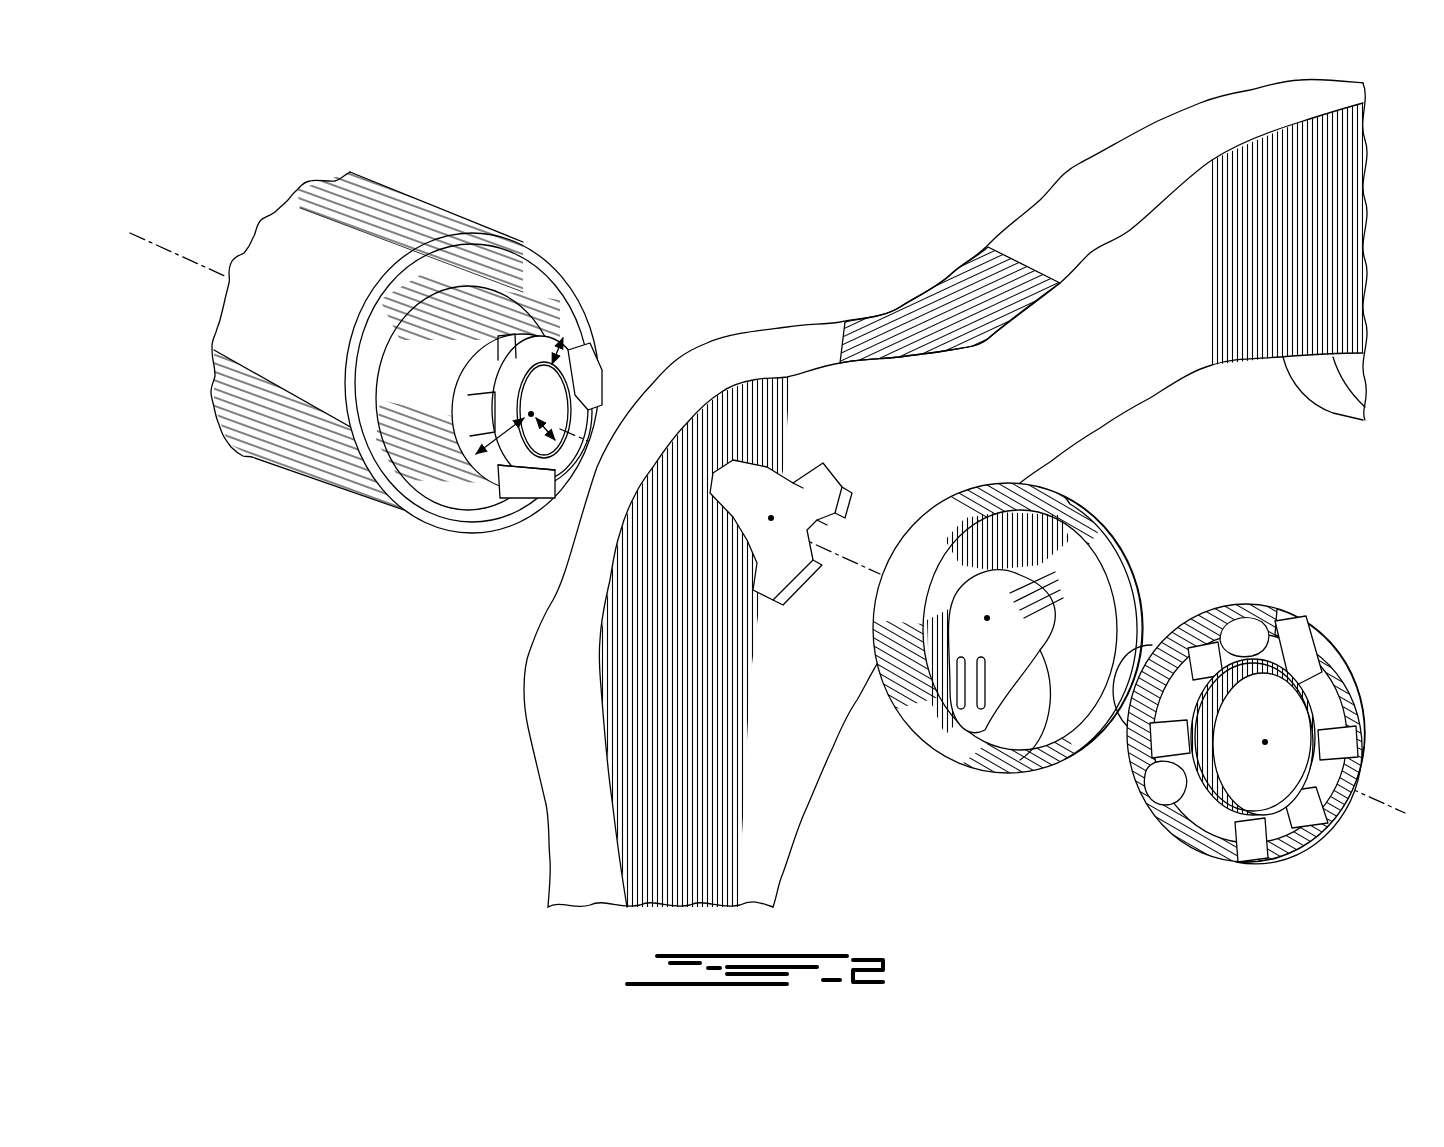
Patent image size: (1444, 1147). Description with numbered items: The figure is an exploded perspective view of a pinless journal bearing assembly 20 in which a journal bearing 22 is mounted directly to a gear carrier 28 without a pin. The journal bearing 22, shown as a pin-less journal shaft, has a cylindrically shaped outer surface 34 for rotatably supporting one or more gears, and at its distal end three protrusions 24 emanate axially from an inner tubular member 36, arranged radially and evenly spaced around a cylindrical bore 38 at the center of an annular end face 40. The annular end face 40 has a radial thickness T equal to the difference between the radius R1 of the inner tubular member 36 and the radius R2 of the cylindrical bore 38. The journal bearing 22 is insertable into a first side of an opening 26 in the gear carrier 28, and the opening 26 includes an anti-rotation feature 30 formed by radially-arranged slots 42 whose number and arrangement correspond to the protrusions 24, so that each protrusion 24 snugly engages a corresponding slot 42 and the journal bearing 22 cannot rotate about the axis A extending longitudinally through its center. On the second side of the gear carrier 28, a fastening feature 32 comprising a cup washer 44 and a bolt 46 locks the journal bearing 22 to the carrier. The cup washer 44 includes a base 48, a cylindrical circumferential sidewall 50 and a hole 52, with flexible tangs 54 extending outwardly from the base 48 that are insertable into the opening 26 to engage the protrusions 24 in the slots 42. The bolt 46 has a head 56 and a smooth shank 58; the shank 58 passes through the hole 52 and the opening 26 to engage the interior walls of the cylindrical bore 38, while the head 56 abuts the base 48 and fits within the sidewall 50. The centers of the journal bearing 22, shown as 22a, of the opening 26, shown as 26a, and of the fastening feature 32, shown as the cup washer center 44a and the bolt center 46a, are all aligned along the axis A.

The journal bearing assembly 20 is at (678, 185).
The journal bearing 22 is at (266, 198).
The center of the journal bearing 22a is at (477, 413).
The protrusion 24 is at (600, 380).
The opening 26 is at (790, 470).
The center of the carrier opening 26a is at (745, 575).
The gear carrier 28 is at (955, 320).
The anti-rotation feature 30 is at (753, 623).
The fastening feature 32 is at (1083, 785).
The outer surface 34 is at (441, 212).
The inner tubular member 36 is at (548, 335).
The cylindrical bore 38 is at (527, 470).
The annular end face 40 is at (523, 440).
The slot 42 is at (848, 470).
The cup washer 44 is at (1044, 688).
The center of the cup washer 44a is at (1038, 690).
The bolt 46 is at (1275, 791).
The center of the bolt 46a is at (1292, 782).
The base 48 is at (940, 597).
The cylindrical circumferential sidewall 50 is at (1117, 570).
The hole 52 is at (997, 730).
The tang 54 is at (1027, 607).
The head 56 is at (1292, 695).
The shank 58 is at (1145, 658).
The axis A is at (752, 512).
The radial thickness T is at (557, 343).
The radius of the inner tubular member R1 is at (505, 470).
The radius of the cylindrical bore R2 is at (565, 432).